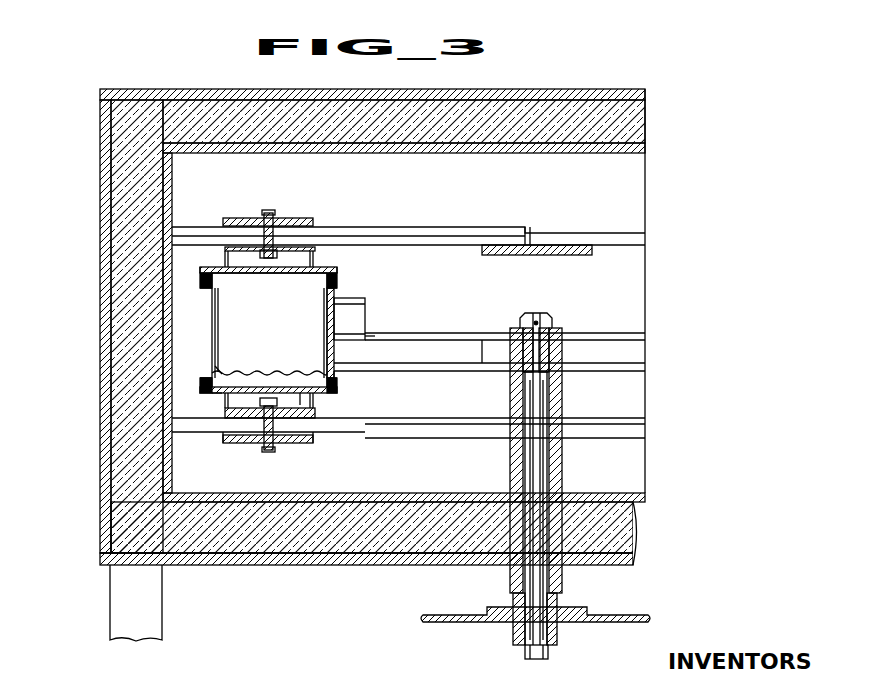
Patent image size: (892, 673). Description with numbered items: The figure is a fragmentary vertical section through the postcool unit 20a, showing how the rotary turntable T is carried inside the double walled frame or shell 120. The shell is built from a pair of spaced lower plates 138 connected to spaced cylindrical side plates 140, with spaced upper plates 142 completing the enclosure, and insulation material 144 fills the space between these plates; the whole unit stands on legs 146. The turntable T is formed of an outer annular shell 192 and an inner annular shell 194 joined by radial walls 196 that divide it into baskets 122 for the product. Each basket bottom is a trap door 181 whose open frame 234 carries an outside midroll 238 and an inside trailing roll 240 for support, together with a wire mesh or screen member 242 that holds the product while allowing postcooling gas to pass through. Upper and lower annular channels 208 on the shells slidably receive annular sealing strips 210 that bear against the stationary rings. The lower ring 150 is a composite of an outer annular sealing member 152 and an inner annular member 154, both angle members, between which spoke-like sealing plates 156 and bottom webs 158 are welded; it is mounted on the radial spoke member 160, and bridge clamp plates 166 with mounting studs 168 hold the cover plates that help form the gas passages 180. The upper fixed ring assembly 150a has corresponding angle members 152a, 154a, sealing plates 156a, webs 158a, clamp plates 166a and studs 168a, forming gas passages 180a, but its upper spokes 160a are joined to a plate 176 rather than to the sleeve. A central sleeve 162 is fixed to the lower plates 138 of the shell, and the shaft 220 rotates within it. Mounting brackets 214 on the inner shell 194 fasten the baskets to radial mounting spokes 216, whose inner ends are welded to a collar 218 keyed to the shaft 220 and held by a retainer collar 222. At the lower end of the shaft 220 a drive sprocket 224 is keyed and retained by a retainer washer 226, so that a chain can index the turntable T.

The postcool unit 20a is at (620, 94).
The double walled frame or shell 120 is at (213, 91).
The baskets 122 is at (365, 312).
The lower plates 138 is at (295, 500).
The cylindrical side plates 140 is at (163, 170).
The upper plates 142 is at (610, 147).
The insulation material 144 is at (197, 99).
The legs 146 is at (145, 620).
The lower ring 150 is at (365, 384).
The upper fixed ring assembly 150a is at (345, 262).
The outer annular sealing member 152 is at (228, 410).
The outer angle member of upper ring 152a is at (195, 267).
The inner annular member 154 is at (312, 420).
The inner angle member of upper ring 154a is at (305, 250).
The sealing plates 156 is at (330, 396).
The upper sealing plates 156a is at (292, 262).
The bottom webs 158 is at (302, 405).
The upper webs 158a is at (300, 262).
The radial spoke member 160 is at (448, 430).
The upper spokes 160a is at (468, 232).
The central sleeve 162 is at (556, 396).
The bridge clamp plates 166 is at (240, 443).
The upper bridge clamp plates 166a is at (262, 222).
The mounting studs 168 is at (272, 450).
The upper mounting studs 168a is at (265, 215).
The plate 176 is at (577, 256).
The gas passages 180 is at (298, 403).
The upper gas passages 180a is at (330, 278).
The trap door 181 is at (215, 372).
The outer annular shell 192 is at (210, 287).
The inner annular shell 194 is at (340, 352).
The radial walls 196 is at (313, 348).
The annular channels 208 is at (345, 290).
The annular sealing strips 210 is at (325, 290).
The mounting brackets 214 is at (348, 314).
The radial mounting spokes 216 is at (480, 358).
The collar 218 is at (561, 331).
The shaft 220 is at (535, 466).
The retainer collar 222 is at (538, 323).
The drive sprocket 224 is at (460, 616).
The retainer washer 226 is at (525, 652).
The open frame 234 is at (205, 383).
The outside midroll 238 is at (215, 399).
The inside trailing roll 240 is at (320, 372).
The wire mesh or screen member 242 is at (248, 365).
The turntable T is at (400, 283).